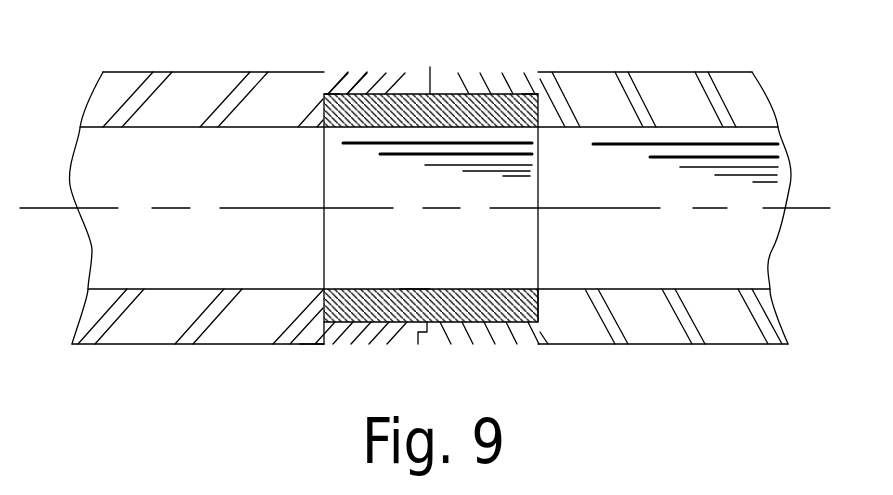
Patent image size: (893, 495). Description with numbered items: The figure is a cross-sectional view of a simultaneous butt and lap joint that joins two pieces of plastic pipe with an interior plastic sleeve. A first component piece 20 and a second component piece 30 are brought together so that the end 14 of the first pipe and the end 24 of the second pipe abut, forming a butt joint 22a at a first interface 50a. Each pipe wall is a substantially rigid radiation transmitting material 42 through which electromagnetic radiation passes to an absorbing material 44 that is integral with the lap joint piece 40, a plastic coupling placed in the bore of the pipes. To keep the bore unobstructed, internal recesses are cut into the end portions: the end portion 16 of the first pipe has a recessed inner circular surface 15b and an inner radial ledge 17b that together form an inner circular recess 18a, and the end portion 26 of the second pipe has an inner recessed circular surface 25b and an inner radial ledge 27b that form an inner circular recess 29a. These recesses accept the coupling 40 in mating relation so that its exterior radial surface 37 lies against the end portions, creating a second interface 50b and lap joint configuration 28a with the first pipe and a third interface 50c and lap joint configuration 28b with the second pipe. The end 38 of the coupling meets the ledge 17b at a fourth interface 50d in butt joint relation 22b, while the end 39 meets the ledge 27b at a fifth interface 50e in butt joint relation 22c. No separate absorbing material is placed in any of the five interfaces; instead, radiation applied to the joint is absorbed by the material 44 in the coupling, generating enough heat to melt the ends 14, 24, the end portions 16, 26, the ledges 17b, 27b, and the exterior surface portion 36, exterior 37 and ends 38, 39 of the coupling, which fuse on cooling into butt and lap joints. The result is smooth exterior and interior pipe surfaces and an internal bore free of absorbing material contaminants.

The first component piece 20 is at (95, 162).
The second component piece 30 is at (733, 242).
The radiation transmitting material 42 is at (203, 87).
The lap joint piece 40 is at (354, 233).
The butt joint 22a is at (430, 63).
The butt joint relation 22b is at (311, 90).
The butt joint relation 22c is at (550, 96).
The exterior surface portion 36 is at (443, 291).
The absorbing material 44 is at (415, 291).
The end 14 is at (430, 90).
The end 24 is at (432, 80).
The recessed inner circular surface 15b is at (339, 77).
The end portion 16 is at (362, 93).
The lap joint configuration 28a is at (390, 93).
The lap joint configuration 28b is at (492, 93).
The end portion 26 is at (508, 93).
The inner recessed circular surface 25b is at (518, 93).
The inner radial ledge 17b is at (323, 100).
The inner radial ledge 27b is at (540, 102).
The end of plastic coupling 38 is at (322, 128).
The end of plastic coupling 39 is at (543, 128).
The first interface 50a is at (418, 344).
The second interface 50b is at (355, 325).
The inner circular recess 18a is at (343, 323).
The third interface 50c is at (483, 323).
The inner circular recess 29a is at (513, 323).
The fourth interface 50d is at (300, 344).
The exterior radial surface 37 is at (323, 346).
The fifth interface 50e is at (540, 297).